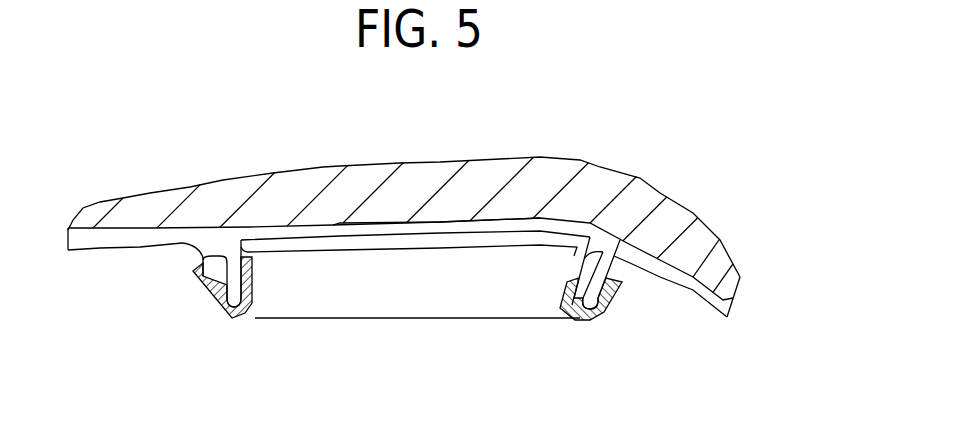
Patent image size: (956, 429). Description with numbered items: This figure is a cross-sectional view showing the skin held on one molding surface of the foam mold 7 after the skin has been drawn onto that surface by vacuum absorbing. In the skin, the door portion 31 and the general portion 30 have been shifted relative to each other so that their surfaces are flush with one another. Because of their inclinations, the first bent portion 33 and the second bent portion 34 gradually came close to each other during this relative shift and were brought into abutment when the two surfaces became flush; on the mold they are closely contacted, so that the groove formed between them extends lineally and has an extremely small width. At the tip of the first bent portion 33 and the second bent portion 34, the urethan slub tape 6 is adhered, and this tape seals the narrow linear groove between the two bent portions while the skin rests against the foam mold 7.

The urethan slub tape 6 is at (222, 315).
The foam mold 7 is at (641, 190).
The general portion 30 is at (86, 249).
The door portion 31 is at (450, 223).
The first bent portion 33 is at (197, 258).
The second bent portion 34 is at (250, 273).